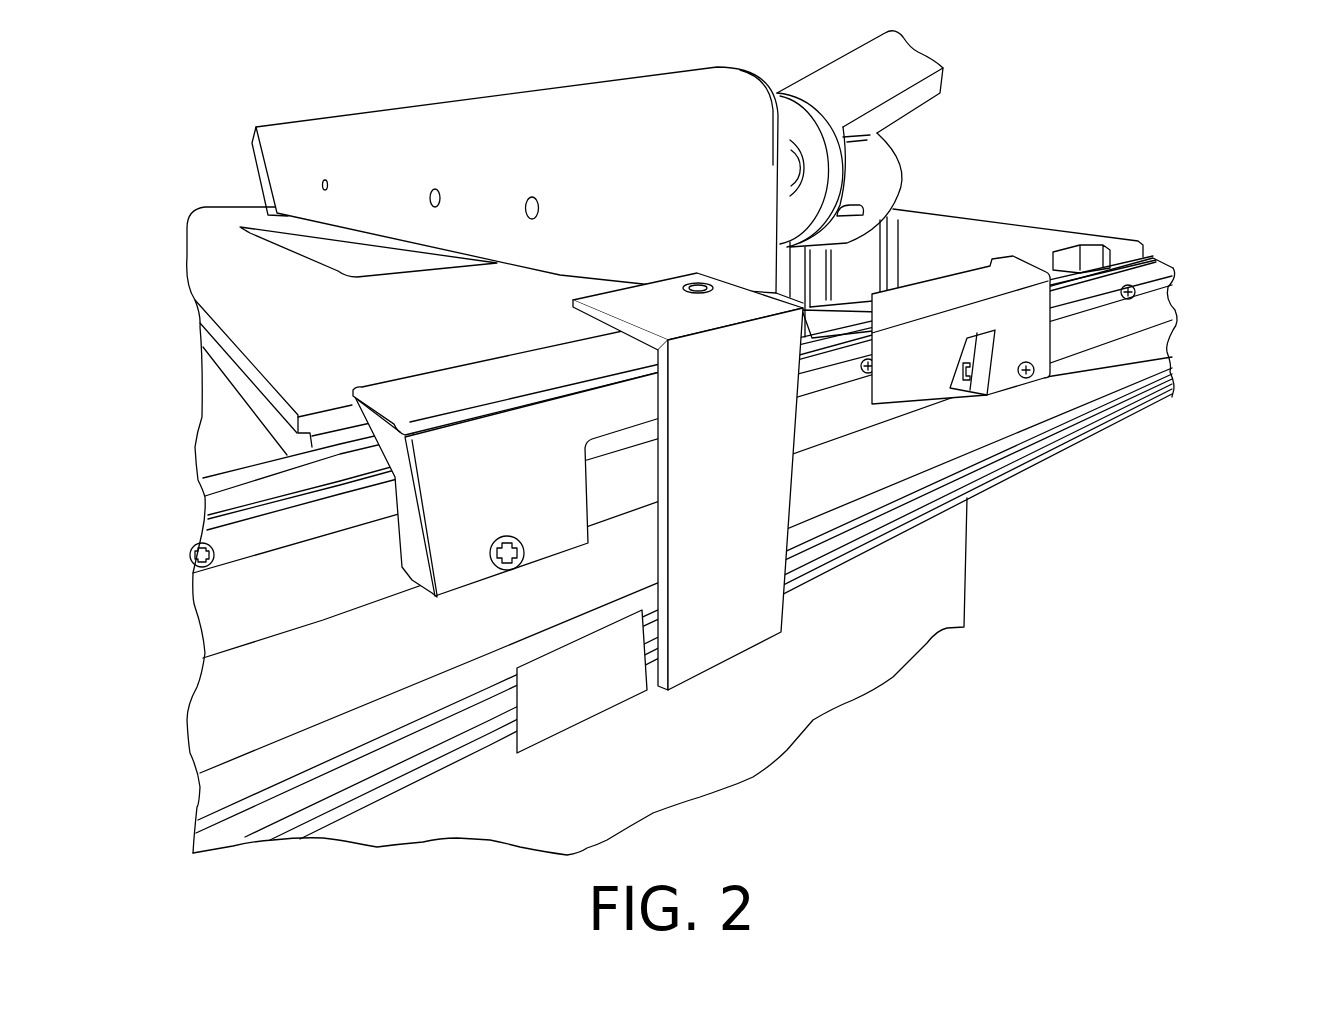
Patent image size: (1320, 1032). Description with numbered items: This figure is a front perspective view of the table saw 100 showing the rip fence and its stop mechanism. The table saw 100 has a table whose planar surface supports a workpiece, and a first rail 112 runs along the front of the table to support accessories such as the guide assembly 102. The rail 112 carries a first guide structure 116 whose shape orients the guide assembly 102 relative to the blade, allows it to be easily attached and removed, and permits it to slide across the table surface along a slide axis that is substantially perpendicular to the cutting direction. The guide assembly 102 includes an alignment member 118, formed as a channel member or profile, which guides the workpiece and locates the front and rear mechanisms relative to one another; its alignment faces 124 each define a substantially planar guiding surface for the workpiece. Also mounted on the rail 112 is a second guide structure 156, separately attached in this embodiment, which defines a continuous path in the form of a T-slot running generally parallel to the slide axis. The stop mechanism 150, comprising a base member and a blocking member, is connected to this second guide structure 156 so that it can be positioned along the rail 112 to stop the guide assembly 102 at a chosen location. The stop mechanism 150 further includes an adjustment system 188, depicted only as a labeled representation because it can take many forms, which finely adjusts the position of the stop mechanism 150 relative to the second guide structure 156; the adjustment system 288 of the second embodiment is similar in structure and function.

The table saw 100 is at (684, 455).
The guide assembly 102 is at (597, 173).
The first rail 112 is at (619, 548).
The first guide structure 116 is at (218, 500).
The alignment member 118 is at (633, 76).
The alignment faces 124 is at (720, 150).
The stop mechanism 150 is at (791, 477).
The second guide structure 156 is at (210, 793).
The adjustment system 188 is at (525, 756).
The adjustment system 288 is at (517, 740).